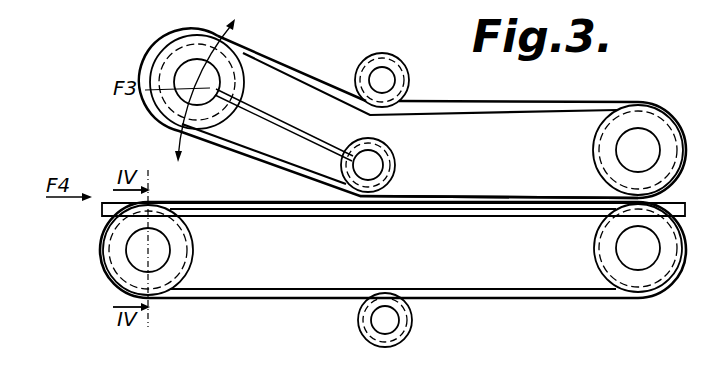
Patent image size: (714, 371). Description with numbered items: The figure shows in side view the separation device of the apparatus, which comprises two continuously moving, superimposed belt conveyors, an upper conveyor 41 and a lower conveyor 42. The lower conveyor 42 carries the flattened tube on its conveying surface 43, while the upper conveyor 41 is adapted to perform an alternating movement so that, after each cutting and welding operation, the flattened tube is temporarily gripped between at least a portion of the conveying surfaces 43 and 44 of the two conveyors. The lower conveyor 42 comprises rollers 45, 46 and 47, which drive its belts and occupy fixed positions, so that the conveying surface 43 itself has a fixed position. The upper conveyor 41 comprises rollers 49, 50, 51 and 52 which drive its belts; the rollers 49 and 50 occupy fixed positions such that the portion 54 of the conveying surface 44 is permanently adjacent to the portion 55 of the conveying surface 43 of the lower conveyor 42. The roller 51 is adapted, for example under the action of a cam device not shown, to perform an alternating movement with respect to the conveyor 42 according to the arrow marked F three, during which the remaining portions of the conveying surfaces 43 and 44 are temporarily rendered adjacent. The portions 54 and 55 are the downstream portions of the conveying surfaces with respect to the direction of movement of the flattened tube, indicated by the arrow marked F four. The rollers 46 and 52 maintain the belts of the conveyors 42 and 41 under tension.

The upper belt conveyor 41 is at (470, 163).
The lower belt conveyor 42 is at (467, 268).
The conveying surface 43 is at (297, 201).
The conveying surface 44 is at (231, 150).
The roller 45 is at (160, 250).
The roller 46 is at (380, 326).
The roller 47 is at (633, 262).
The roller 49 is at (643, 140).
The roller 50 is at (368, 172).
The roller 51 is at (210, 80).
The roller 52 is at (393, 80).
The portion of conveying surface 54 is at (556, 207).
The portion of conveying surface 55 is at (507, 195).